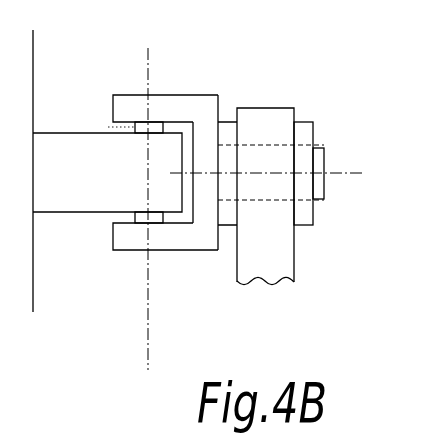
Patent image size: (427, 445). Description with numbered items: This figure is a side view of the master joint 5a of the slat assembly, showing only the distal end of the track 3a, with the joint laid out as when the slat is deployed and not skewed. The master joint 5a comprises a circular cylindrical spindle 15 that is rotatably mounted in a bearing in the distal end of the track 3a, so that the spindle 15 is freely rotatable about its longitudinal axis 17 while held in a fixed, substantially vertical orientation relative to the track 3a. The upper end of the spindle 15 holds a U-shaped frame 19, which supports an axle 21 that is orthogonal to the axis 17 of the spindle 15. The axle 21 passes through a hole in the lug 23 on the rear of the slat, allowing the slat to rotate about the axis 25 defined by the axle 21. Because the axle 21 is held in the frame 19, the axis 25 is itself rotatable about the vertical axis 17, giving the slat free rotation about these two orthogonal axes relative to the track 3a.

The master joint 5a is at (170, 162).
The U-shaped frame 19 is at (121, 108).
The axle 21 is at (157, 223).
The lug 23 is at (78, 213).
The axis 25 is at (147, 335).
The track 3a is at (280, 262).
The spindle 15 is at (305, 160).
The longitudinal axis 17 is at (357, 177).